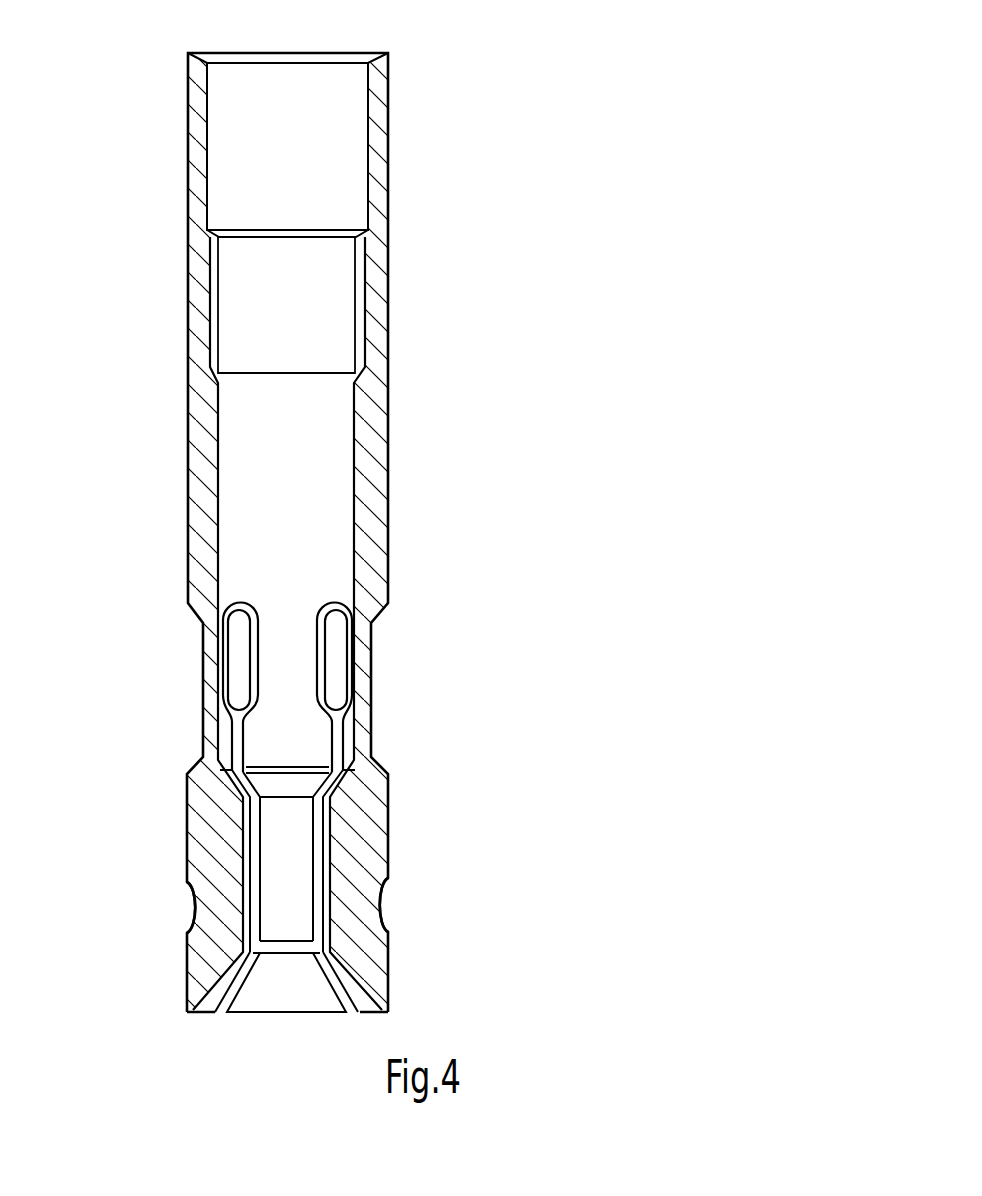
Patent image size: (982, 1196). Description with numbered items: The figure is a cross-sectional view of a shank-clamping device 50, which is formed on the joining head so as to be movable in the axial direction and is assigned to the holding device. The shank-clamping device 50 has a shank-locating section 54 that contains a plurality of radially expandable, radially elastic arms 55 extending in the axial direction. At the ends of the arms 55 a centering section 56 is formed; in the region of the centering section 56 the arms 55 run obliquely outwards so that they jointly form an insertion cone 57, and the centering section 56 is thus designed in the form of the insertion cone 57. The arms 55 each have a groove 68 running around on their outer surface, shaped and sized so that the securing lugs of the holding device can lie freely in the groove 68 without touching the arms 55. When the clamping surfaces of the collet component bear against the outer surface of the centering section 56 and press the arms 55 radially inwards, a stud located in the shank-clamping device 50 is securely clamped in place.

The shank-clamping device 50 is at (448, 117).
The shank-locating section 54 is at (187, 940).
The arms 55 is at (362, 827).
The centering section 56 is at (187, 1013).
The insertion cone 57 is at (315, 995).
The groove 68 is at (380, 905).